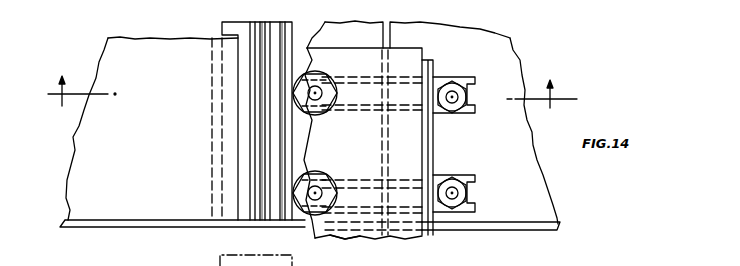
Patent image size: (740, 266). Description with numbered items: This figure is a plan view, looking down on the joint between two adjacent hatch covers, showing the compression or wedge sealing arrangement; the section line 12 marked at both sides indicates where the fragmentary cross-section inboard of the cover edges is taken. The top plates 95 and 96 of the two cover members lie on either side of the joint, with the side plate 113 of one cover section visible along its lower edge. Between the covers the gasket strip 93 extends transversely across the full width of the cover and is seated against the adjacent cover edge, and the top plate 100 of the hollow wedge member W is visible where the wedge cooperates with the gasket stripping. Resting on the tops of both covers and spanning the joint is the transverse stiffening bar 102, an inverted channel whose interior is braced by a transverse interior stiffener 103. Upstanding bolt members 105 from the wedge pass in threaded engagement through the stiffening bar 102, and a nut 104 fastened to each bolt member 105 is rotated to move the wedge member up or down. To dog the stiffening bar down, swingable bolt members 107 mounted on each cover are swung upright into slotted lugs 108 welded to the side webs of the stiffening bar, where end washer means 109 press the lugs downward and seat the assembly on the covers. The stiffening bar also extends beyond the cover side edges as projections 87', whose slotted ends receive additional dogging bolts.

The section line 12- 12 is at (306, 92).
The projection 87' is at (355, 246).
The gasket strip 93 is at (282, 153).
The top plate 95 is at (156, 152).
The top plate 96 is at (507, 154).
The top plate of wedge member 100 is at (367, 42).
The stiffening bar 102 is at (372, 162).
The transverse interior stiffener 103 is at (450, 37).
The nut 104 is at (338, 67).
The bolt member 105 is at (318, 93).
The bolt member 107 is at (454, 107).
The slotted lug 108 is at (472, 77).
The end washer means 109 is at (452, 92).
The side plate 113 is at (165, 228).